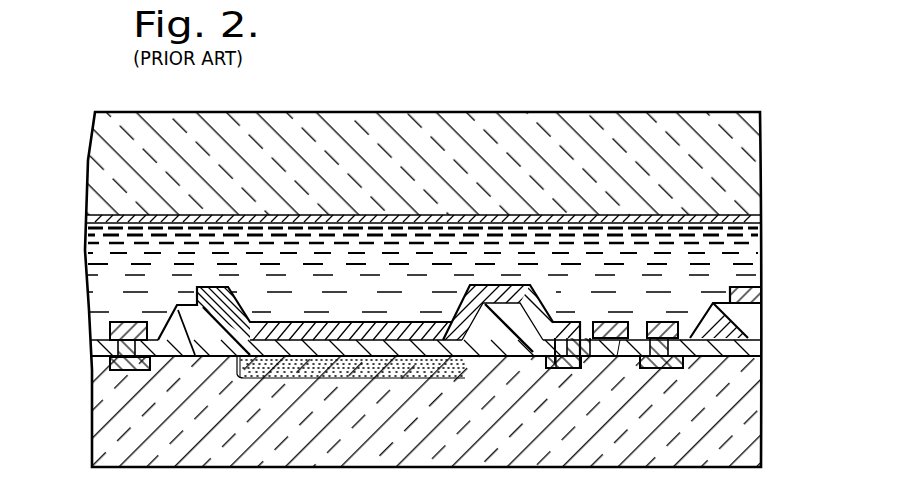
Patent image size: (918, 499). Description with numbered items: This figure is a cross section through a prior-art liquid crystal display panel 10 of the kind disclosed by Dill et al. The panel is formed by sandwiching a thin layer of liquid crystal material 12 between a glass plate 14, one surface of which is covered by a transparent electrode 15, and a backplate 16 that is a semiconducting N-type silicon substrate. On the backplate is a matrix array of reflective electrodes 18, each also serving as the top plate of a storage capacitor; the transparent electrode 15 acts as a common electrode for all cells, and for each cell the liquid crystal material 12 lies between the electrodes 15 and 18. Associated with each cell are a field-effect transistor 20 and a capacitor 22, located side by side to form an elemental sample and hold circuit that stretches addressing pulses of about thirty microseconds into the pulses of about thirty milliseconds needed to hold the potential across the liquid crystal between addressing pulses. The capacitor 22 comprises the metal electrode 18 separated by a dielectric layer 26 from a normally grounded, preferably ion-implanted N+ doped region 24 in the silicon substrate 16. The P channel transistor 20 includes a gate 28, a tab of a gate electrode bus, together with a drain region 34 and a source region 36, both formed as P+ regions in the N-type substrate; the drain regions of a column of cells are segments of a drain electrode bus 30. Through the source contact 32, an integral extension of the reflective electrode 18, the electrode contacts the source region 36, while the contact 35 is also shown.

The liquid crystal display panel 10 is at (483, 102).
The liquid crystal material 12 is at (95, 269).
The glass plate 14 is at (95, 164).
The transparent electrode 15 is at (762, 220).
The backplate 16 is at (752, 435).
The reflective electrode 18 is at (360, 326).
The field-effect transistor 20 is at (662, 309).
The capacitor 22 is at (240, 391).
The N+ doped region 24 is at (360, 378).
The dielectric layer 26 is at (462, 348).
The gate 28 is at (608, 326).
The drain electrode bus 30 is at (110, 328).
The source contact 32 is at (562, 350).
The drain region 34 is at (108, 368).
The contact 35 is at (625, 352).
The source region 36 is at (572, 370).